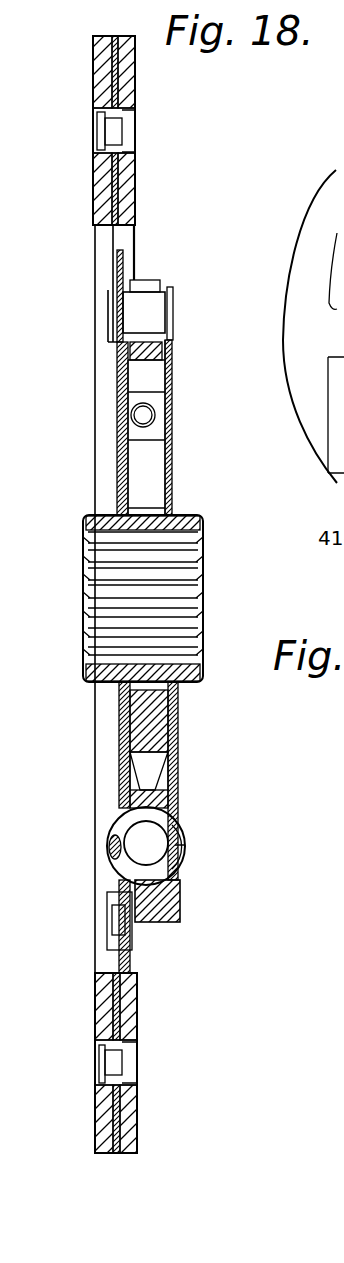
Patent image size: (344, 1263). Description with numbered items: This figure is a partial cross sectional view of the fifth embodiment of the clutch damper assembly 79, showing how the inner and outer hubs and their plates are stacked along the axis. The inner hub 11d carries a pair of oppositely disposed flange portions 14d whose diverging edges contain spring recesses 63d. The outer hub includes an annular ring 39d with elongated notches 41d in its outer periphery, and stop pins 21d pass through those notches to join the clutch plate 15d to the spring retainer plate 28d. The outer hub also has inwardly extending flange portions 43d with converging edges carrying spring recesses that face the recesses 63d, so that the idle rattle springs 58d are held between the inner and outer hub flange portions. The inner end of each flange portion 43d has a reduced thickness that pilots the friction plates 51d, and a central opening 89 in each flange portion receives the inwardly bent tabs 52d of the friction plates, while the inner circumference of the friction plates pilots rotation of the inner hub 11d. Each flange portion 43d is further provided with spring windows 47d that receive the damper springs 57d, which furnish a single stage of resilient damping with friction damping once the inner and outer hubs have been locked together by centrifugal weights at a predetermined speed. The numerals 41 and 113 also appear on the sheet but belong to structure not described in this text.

The clutch damper assembly 79 is at (200, 226).
The elongated notches 41d is at (140, 280).
The stop pins 21d is at (165, 298).
The annular ring 39d is at (173, 335).
The clutch plate 15d is at (115, 384).
The spring recesses 63d is at (164, 353).
The idle rattle springs 58d is at (153, 413).
The flange portions 14d is at (172, 455).
The inner hub 11d is at (210, 512).
The friction plates 51d is at (118, 722).
The flange portions 43d is at (175, 718).
The central opening 89 is at (178, 732).
The inwardly bent tabs 52d is at (118, 783).
The spring retainer plate 28d is at (180, 768).
The damper springs 57d is at (185, 843).
The spring windows 47d is at (309, 338).
The cap 41 is at (335, 113).
The member 113 is at (343, 847).